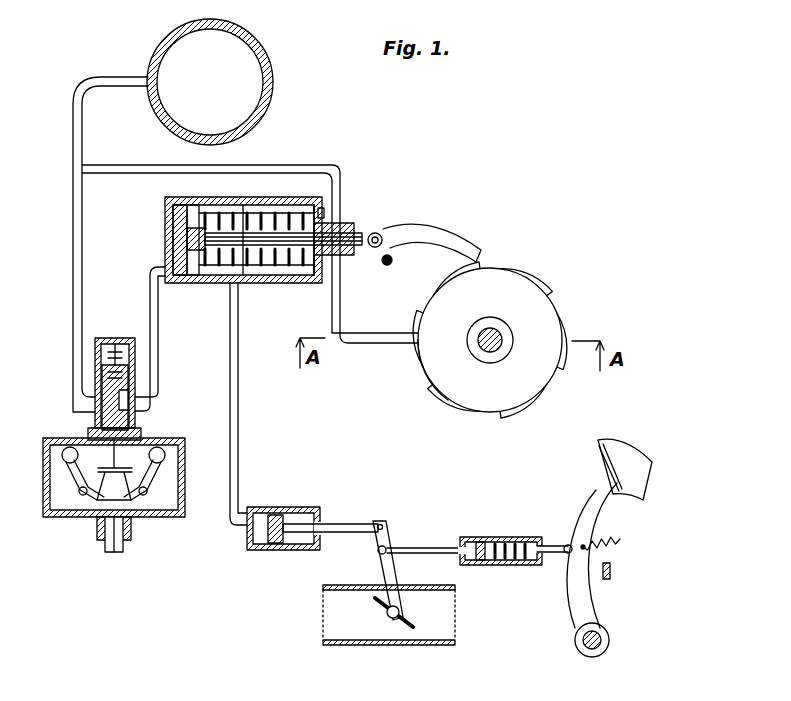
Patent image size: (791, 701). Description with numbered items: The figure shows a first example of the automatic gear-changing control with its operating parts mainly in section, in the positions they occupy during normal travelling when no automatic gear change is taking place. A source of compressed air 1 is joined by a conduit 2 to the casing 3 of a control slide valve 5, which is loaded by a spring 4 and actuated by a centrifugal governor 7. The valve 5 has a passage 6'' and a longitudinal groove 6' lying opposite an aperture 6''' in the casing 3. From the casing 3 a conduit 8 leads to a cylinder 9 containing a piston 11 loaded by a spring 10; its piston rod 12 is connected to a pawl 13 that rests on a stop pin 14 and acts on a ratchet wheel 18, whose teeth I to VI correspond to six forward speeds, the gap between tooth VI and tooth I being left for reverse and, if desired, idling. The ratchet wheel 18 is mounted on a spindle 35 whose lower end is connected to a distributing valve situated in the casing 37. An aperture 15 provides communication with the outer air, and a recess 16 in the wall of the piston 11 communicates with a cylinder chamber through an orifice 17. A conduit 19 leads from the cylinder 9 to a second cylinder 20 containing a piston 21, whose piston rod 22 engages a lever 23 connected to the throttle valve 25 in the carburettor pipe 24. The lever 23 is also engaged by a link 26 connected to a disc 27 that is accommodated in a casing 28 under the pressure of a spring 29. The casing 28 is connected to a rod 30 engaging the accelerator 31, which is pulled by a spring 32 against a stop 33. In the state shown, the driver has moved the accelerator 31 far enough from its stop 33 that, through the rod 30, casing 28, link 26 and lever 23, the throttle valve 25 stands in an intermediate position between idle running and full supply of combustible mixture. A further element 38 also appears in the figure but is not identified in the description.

The source of compressed air 1 is at (262, 100).
The conduit 2 is at (82, 212).
The casing 3 is at (95, 358).
The spring 4 is at (120, 345).
The control slide valve 5 is at (101, 386).
The longitudinal groove 6' is at (149, 398).
The passage 6'' is at (93, 422).
The aperture 6''' is at (146, 396).
The centrifugal governor 7 is at (185, 455).
The conduit 8 is at (158, 328).
The cylinder 9 is at (165, 214).
The spring 10 is at (284, 253).
The piston 11 is at (207, 205).
The piston rod 12 is at (263, 240).
The pawl 13 is at (436, 228).
The stop pin 14 is at (385, 265).
The aperture 15 is at (324, 213).
The recess 16 is at (195, 276).
The orifice 17 is at (215, 276).
The ratchet wheel 18 is at (440, 360).
The conduit 19 is at (238, 376).
The cylinder 20 is at (262, 510).
The piston 21 is at (276, 544).
The piston rod 22 is at (350, 524).
The lever 23 is at (387, 567).
The carburettor pipe 24 is at (345, 618).
The throttle valve 25 is at (400, 630).
The link 26 is at (428, 548).
The disc 27 is at (480, 542).
The casing 28 is at (505, 565).
The spring 29 is at (512, 544).
The rod 30 is at (552, 553).
The accelerator 31 is at (596, 486).
The spring 32 is at (610, 536).
The stop 33 is at (610, 570).
The spindle 35 is at (492, 352).
The casing 37 is at (440, 393).
The pipe 38 is at (125, 172).